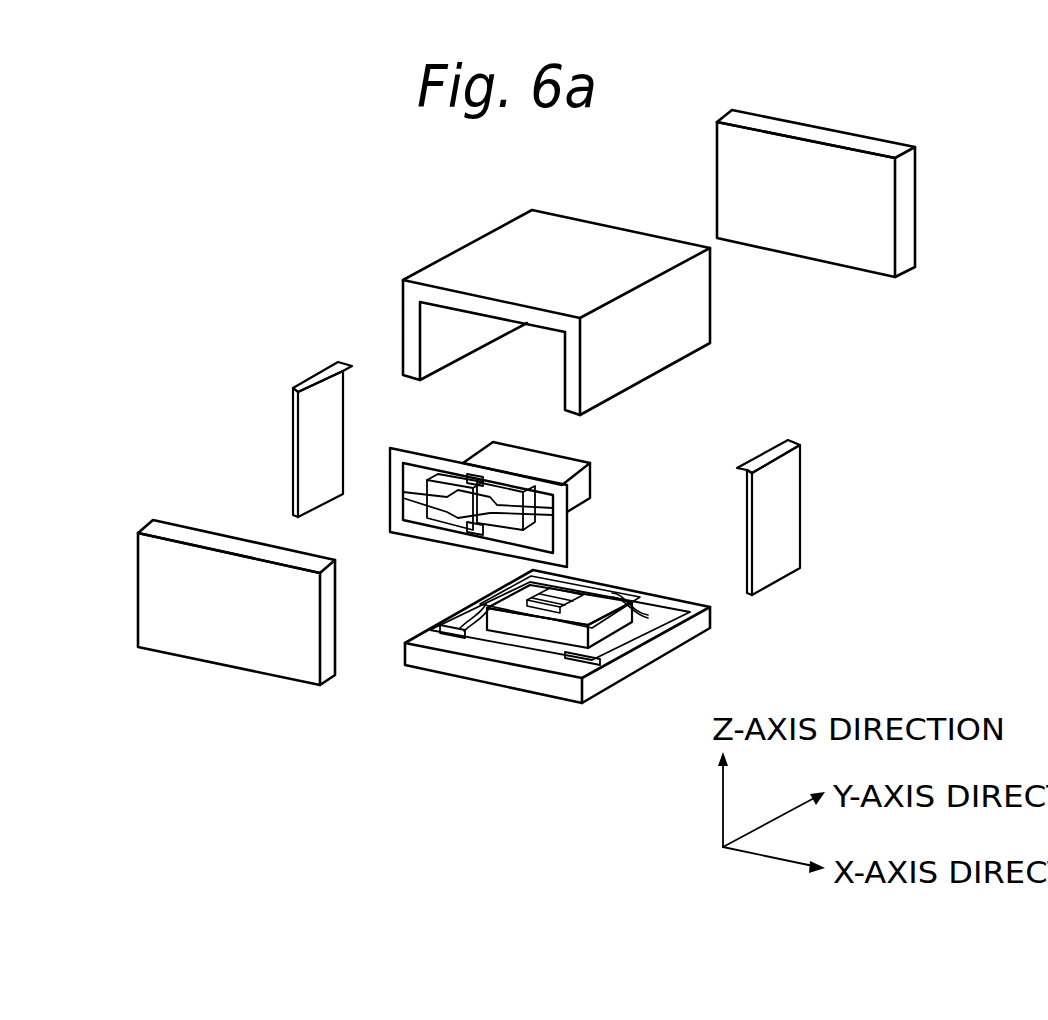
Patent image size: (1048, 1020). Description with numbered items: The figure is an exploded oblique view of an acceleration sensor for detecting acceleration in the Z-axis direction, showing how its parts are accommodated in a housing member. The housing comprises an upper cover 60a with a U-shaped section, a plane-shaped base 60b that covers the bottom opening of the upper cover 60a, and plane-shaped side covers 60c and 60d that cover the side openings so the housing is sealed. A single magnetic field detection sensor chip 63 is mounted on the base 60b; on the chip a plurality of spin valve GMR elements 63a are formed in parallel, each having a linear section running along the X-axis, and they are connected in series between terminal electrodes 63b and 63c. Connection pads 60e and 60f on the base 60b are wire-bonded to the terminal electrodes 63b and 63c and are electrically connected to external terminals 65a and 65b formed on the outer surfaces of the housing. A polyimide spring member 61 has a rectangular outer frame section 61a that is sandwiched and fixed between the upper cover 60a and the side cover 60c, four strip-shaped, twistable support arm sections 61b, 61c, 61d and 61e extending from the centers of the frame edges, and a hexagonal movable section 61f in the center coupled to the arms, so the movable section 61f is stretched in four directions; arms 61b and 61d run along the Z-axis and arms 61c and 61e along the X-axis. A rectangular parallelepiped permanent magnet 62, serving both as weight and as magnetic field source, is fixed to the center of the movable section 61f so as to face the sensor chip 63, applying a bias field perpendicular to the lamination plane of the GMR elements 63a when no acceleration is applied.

The upper cover 60a is at (700, 313).
The base 60b is at (675, 638).
The side cover 60c is at (230, 647).
The side cover 60d is at (903, 188).
The connection pad 60e is at (617, 650).
The connection pad 60f is at (445, 630).
The spring member 61 is at (534, 494).
The outer frame section 61a is at (560, 498).
The support arm section 61b is at (472, 480).
The support arm section 61c is at (537, 517).
The support arm section 61d is at (483, 537).
The support arm section 61e is at (418, 490).
The movable section 61f is at (463, 507).
The permanent magnet 62 is at (560, 465).
The magnetic field detection sensor chip 63 is at (553, 635).
The spin valve GMR element 63a is at (522, 618).
The terminal electrode 63b is at (617, 595).
The terminal electrode 63c is at (543, 578).
The external terminal 65a is at (773, 568).
The external terminal 65b is at (307, 447).